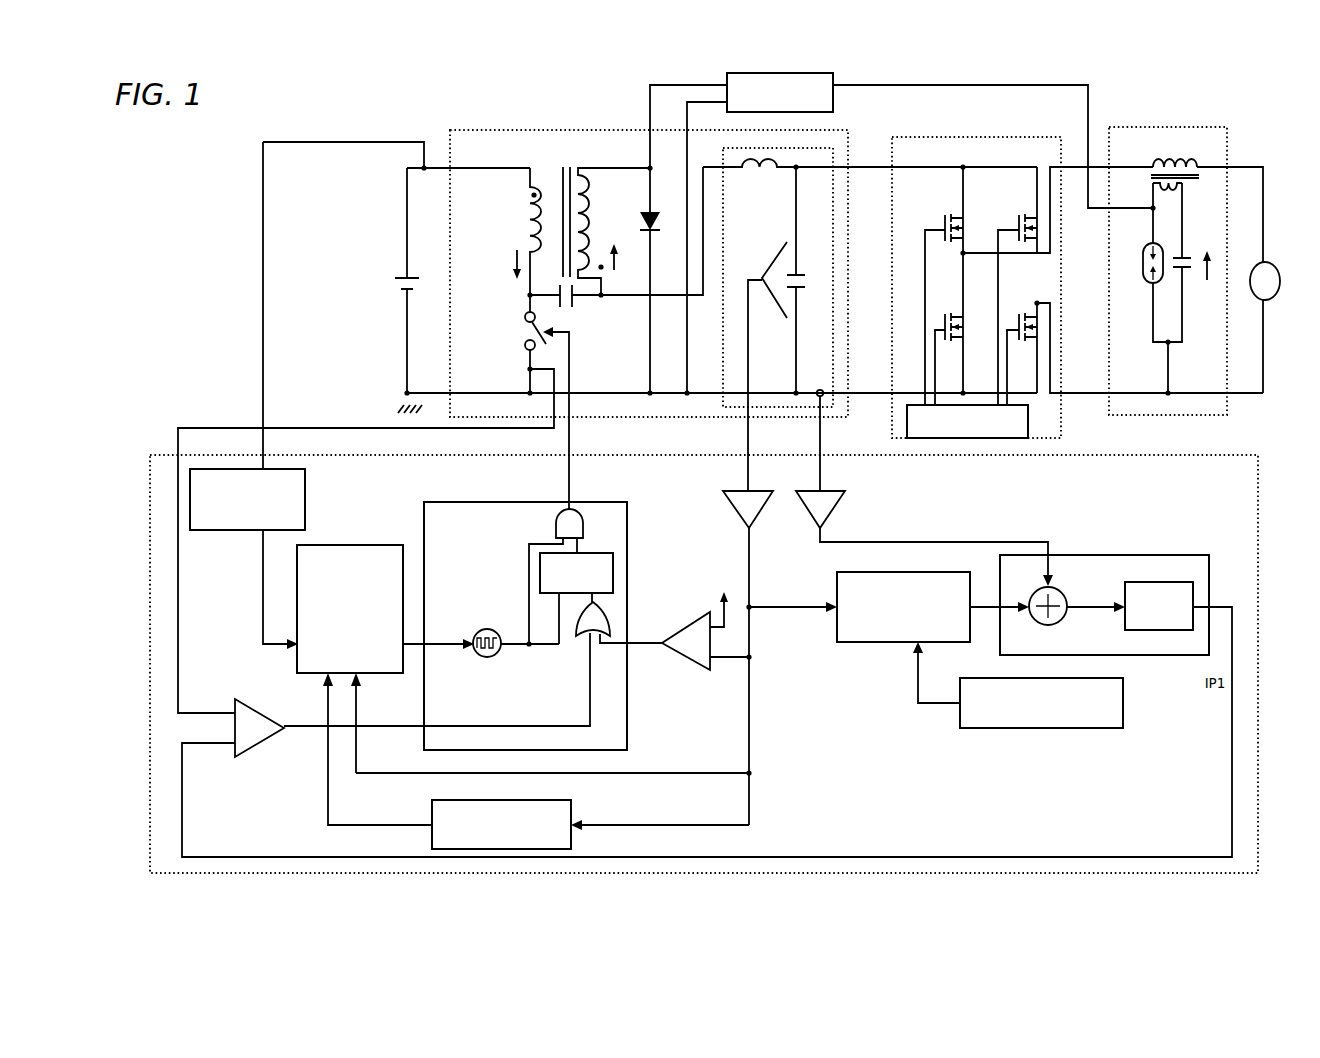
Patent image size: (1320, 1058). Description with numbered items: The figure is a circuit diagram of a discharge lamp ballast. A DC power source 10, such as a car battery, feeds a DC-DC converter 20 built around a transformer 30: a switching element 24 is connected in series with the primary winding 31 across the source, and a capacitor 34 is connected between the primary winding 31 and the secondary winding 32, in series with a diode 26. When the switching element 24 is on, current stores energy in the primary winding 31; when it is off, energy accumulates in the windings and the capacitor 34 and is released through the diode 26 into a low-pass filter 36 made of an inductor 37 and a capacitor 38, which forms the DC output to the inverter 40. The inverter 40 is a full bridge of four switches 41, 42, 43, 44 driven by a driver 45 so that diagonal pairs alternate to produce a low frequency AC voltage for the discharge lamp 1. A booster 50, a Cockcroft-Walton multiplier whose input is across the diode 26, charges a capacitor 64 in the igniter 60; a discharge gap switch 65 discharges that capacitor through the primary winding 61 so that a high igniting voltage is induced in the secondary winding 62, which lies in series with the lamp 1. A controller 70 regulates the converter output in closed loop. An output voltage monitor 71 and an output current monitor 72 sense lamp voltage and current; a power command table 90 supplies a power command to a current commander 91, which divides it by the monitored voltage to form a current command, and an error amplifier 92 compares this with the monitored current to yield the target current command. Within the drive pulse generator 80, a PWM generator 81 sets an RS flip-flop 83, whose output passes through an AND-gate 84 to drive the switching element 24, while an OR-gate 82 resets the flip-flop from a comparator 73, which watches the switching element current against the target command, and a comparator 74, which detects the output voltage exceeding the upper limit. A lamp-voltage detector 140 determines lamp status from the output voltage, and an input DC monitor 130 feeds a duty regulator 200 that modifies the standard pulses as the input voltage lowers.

The discharge lamp 1 is at (1281, 272).
The DC power source 10 is at (384, 285).
The DC-DC converter 20 is at (474, 127).
The switching element 24 is at (526, 332).
The diode 26 is at (663, 222).
The transformer 30 is at (568, 160).
The primary winding 31 is at (535, 215).
The secondary winding 32 is at (598, 208).
The capacitor 34 is at (573, 312).
The low-pass filter 36 is at (778, 277).
The inductor 37 is at (757, 176).
The capacitor 38 is at (809, 280).
The inverter 40 is at (1024, 133).
The switch 41 is at (940, 220).
The switch 42 is at (942, 314).
The switch 43 is at (1013, 220).
The switch 44 is at (1013, 314).
The driver 45 is at (967, 421).
The booster 50 is at (780, 92).
The igniter 60 is at (1229, 124).
The primary winding 61 is at (1187, 188).
The secondary winding 62 is at (1175, 163).
The capacitor 64 is at (1195, 272).
The discharge gap switch 65 is at (1142, 272).
The controller 70 is at (1262, 490).
The output voltage monitor 71 is at (748, 509).
The output current monitor 72 is at (924, 538).
The comparator 73 is at (259, 728).
The comparator 74 is at (705, 623).
The drive pulse generator 80 is at (525, 626).
The PWM generator 81 is at (490, 658).
The OR-gate 82 is at (619, 622).
The RS flip-flop 83 is at (576, 590).
The AND-gate 84 is at (569, 523).
The power command table 90 is at (1018, 685).
The current commander 91 is at (889, 607).
The error amplifier 92 is at (1104, 605).
The input DC monitor 130 is at (247, 499).
The lamp-voltage detector 140 is at (536, 761).
The duty regulator 200 is at (350, 609).